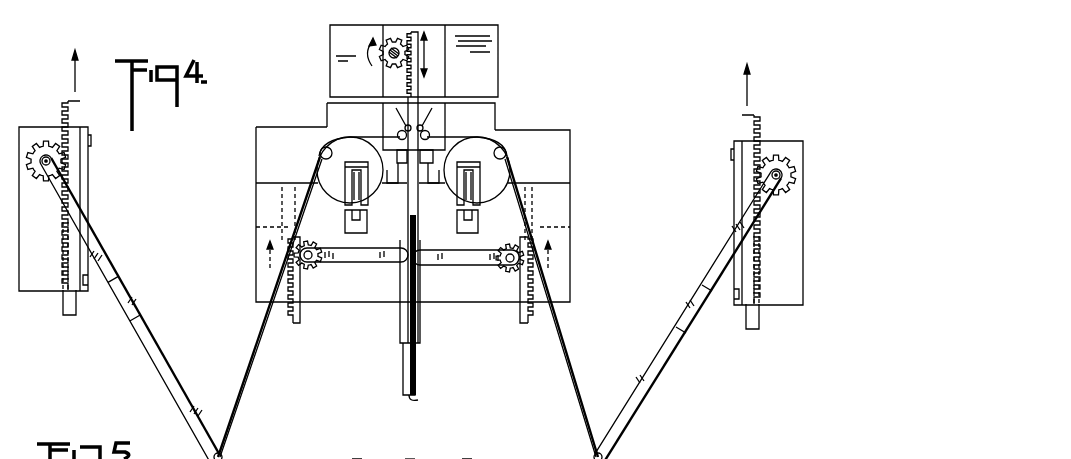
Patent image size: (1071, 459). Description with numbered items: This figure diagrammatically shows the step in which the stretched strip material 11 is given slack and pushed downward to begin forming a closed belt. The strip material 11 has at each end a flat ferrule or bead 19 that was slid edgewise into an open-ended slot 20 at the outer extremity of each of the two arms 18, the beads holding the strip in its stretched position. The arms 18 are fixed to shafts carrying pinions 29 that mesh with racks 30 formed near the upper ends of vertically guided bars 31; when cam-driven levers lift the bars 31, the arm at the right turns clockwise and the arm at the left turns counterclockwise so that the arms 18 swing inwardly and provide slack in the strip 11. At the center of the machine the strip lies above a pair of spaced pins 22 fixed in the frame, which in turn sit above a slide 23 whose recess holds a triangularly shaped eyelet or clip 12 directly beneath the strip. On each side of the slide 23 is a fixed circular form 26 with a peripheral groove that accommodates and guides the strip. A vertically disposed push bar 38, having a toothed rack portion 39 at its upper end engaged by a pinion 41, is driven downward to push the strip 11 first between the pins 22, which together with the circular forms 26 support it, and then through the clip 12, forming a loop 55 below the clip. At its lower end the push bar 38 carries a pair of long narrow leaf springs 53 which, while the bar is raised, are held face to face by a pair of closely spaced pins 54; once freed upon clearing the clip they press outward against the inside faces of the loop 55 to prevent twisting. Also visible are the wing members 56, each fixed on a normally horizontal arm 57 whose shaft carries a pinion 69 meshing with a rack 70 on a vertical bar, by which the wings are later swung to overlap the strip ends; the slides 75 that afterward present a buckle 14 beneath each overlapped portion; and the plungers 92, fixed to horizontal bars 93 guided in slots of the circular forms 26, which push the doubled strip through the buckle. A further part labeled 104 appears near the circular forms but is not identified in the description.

The strip material 11 is at (572, 367).
The triangularly shaped eyelet or clip 12 is at (410, 457).
The buckle 14 is at (412, 448).
The arm 18 is at (130, 290).
The flat ferrule or bead 19 is at (236, 458).
The open-ended slot 20 is at (573, 453).
The spaced pins 22 is at (399, 134).
The slide 23 is at (397, 172).
The circular form 26 is at (336, 152).
The pinion 29 is at (46, 140).
The rack 30 is at (62, 232).
The bar 31 is at (82, 183).
The push bar 38 is at (414, 213).
The toothed rack portion 39 is at (407, 76).
The pinion 41 is at (384, 43).
The leaf spring 53 is at (404, 363).
The pin 54 is at (405, 126).
The loop 55 is at (414, 398).
The wing member 56 is at (402, 316).
The arm 57 is at (362, 256).
The pinion 69 is at (301, 270).
The rack 70 is at (256, 227).
The slide 75 is at (366, 232).
The plunger 92 is at (356, 190).
The horizontal bar 93 is at (349, 167).
The pulley 104 is at (321, 152).